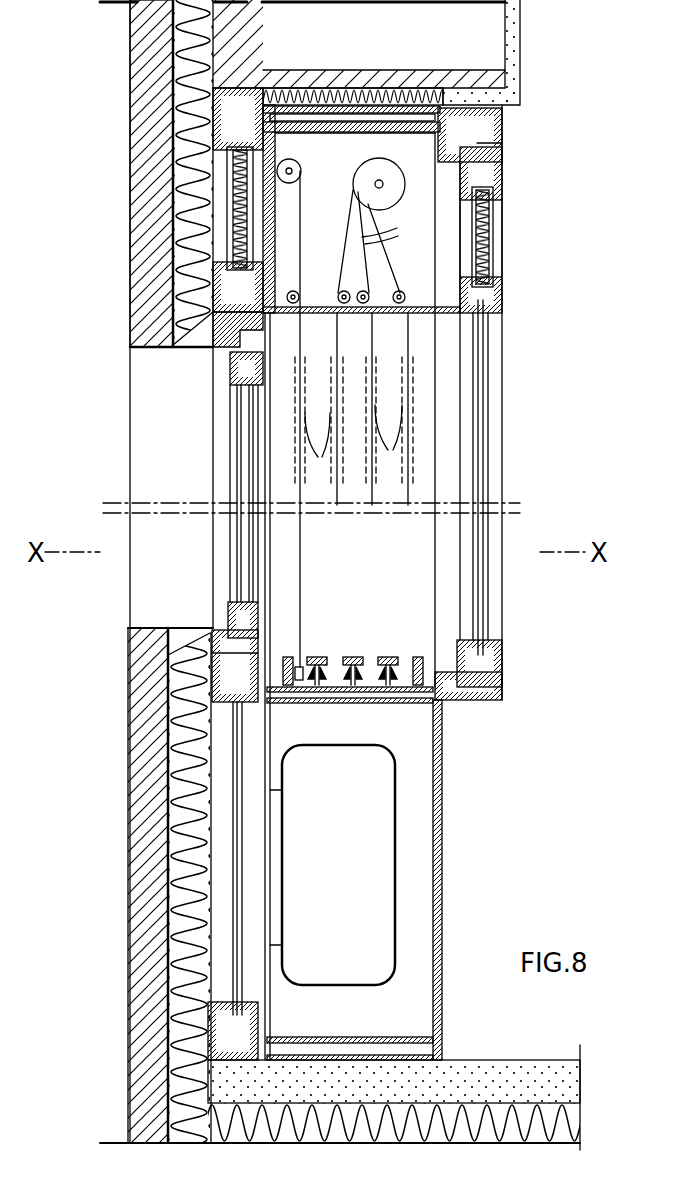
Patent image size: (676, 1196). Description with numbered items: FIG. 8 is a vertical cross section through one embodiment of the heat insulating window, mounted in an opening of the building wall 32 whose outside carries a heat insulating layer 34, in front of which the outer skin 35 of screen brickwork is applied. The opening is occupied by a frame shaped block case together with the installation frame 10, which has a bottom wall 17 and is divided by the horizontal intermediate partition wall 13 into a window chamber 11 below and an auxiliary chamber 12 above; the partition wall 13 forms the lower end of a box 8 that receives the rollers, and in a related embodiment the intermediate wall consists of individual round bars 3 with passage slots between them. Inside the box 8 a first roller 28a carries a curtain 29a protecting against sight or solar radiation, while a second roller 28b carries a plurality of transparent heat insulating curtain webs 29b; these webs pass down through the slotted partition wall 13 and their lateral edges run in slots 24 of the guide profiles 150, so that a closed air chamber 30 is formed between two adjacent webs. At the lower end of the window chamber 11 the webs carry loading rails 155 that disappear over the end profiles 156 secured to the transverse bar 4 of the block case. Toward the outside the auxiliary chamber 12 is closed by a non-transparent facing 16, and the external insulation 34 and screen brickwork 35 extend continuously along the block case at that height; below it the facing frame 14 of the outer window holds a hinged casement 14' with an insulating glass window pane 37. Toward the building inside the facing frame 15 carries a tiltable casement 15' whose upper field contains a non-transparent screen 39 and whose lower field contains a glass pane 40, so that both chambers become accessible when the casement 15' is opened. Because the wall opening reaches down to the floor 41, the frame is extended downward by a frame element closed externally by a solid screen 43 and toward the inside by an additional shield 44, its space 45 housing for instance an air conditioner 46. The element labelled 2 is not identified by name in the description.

The guide rail bracket 2 is at (500, 297).
The round bars 3 is at (340, 290).
The transverse bar 4 is at (232, 144).
The box 8 is at (279, 155).
The installation frame 10 is at (362, 88).
The window chamber 11 is at (405, 603).
The auxiliary chamber 12 is at (372, 163).
The intermediate partition wall 13 is at (426, 306).
The facing frame 14 is at (199, 507).
The casement 14' is at (211, 495).
The facing frame 15 is at (491, 432).
The casement 15' is at (504, 417).
The non-transparent shield 16 is at (240, 210).
The bottom wall 17 is at (407, 704).
The slots 24 is at (353, 449).
The first roller 28a is at (301, 172).
The second roller 28b is at (396, 176).
The curtain 29a is at (300, 573).
The curtain webs 29b is at (397, 225).
The closed air chamber 30 is at (399, 350).
The building wall 32 is at (490, 40).
The heat insulating layer 34 is at (183, 33).
The outer skin 35 is at (150, 103).
The window pane 37 is at (238, 563).
The non-transparent screen 39 is at (495, 220).
The glass pane 40 is at (483, 355).
The floor 41 is at (562, 1083).
The solid screen 43 is at (238, 797).
The additional shield 44 is at (442, 864).
The space 45 is at (347, 1035).
The air conditioner 46 is at (396, 782).
The guide profiles 150 is at (428, 425).
The loading rails 155 is at (299, 682).
The end profiles 156 is at (385, 658).